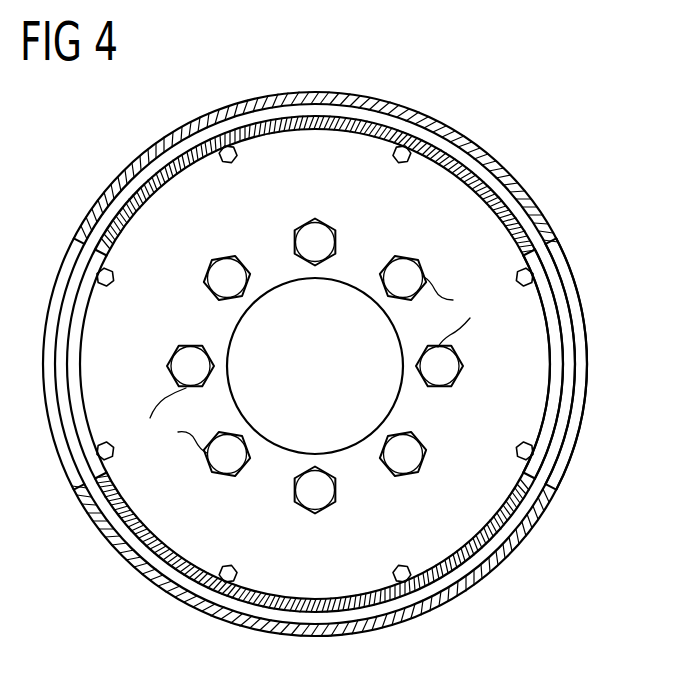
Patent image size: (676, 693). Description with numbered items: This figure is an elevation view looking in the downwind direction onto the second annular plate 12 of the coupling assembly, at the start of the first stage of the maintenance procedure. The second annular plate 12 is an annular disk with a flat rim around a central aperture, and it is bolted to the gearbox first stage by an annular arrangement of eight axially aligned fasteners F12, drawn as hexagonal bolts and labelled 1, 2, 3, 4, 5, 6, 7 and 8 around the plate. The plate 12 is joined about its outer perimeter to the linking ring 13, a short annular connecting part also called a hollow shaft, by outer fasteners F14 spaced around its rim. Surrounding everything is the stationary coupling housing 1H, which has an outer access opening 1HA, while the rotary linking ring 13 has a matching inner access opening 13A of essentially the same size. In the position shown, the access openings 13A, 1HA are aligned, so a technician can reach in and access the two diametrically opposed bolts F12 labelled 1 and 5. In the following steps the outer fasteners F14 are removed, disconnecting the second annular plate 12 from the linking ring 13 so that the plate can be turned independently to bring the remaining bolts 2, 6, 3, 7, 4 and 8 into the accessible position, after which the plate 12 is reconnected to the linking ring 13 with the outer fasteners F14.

The coupling housing 1H is at (527, 533).
The outer access opening 1HA is at (572, 424).
The linking ring 13 is at (480, 192).
The inner access opening 13A is at (550, 306).
The second annular plate 12 is at (337, 138).
The outer fasteners F14 is at (394, 159).
The fasteners F12 is at (315, 365).
The bolt 1 is at (439, 366).
The bolt 2 is at (402, 454).
The bolt 3 is at (314, 490).
The bolt 4 is at (226, 454).
The bolt 5 is at (190, 366).
The bolt 6 is at (226, 278).
The bolt 7 is at (314, 242).
The bolt 8 is at (402, 278).